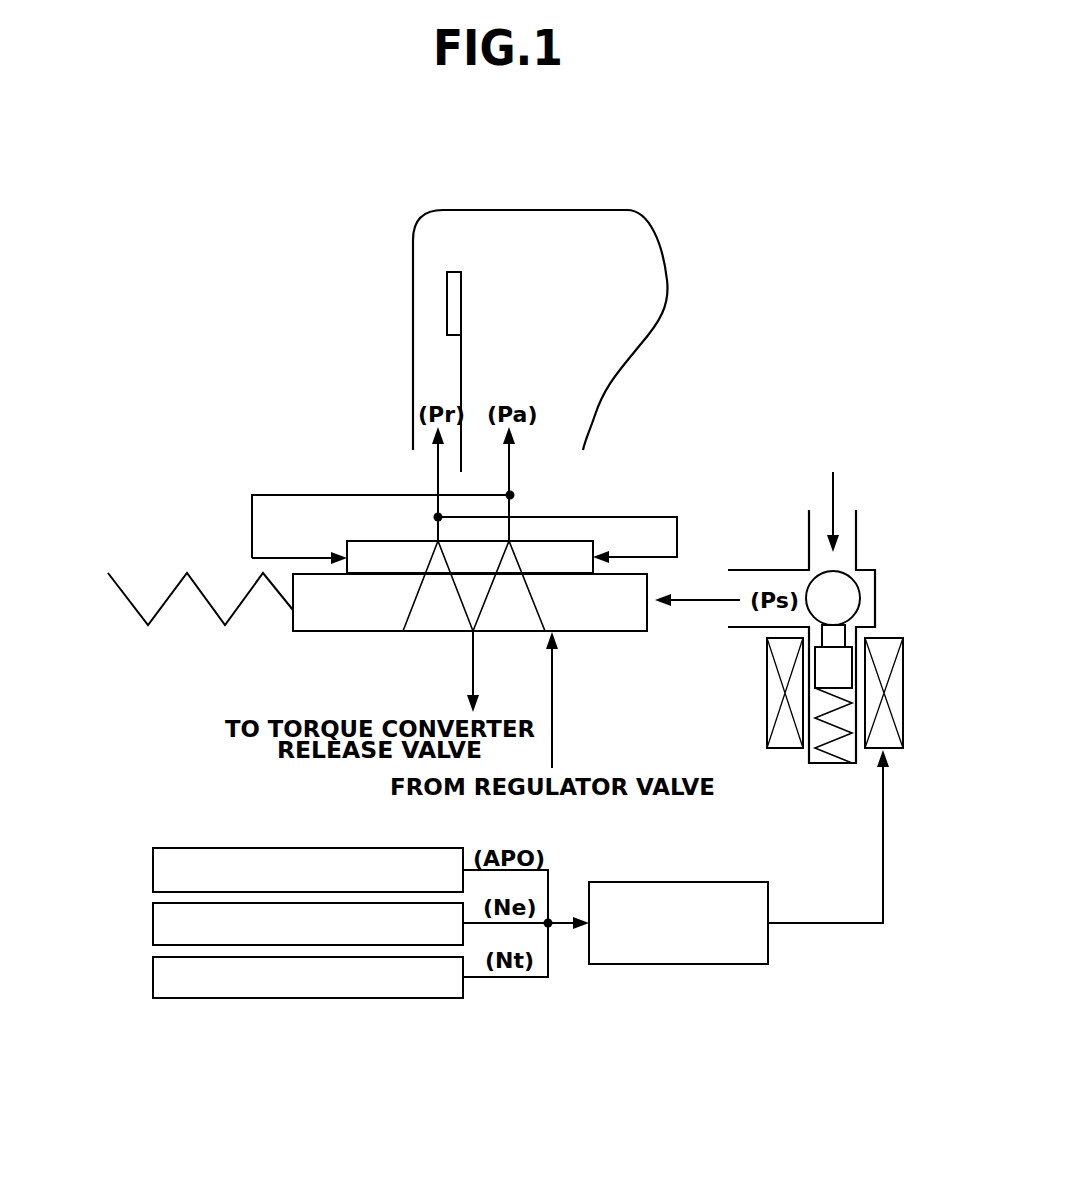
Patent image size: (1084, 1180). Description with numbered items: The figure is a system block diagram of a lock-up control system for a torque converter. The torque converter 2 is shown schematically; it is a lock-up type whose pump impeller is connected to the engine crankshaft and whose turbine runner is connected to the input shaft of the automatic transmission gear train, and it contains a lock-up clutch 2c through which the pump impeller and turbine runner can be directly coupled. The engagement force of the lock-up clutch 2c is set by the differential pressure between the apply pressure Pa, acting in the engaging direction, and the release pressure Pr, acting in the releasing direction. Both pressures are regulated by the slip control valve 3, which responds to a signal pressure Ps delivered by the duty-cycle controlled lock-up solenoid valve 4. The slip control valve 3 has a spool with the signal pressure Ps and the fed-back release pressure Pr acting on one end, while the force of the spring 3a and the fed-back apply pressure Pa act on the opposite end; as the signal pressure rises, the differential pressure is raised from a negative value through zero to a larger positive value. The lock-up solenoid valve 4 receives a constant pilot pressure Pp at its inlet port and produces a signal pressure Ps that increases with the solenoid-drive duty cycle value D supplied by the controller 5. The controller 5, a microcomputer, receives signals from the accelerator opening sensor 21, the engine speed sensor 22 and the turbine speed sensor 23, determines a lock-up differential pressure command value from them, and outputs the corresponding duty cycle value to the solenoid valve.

The torque converter 2 is at (690, 246).
The lock-up clutch 2c is at (461, 300).
The slip control valve 3 is at (326, 640).
The spring 3a is at (212, 612).
The lock-up solenoid valve 4 is at (876, 600).
The controller 5 is at (720, 882).
The accelerator opening sensor 21 is at (153, 872).
The engine speed sensor 22 is at (153, 925).
The turbine speed sensor 23 is at (153, 978).